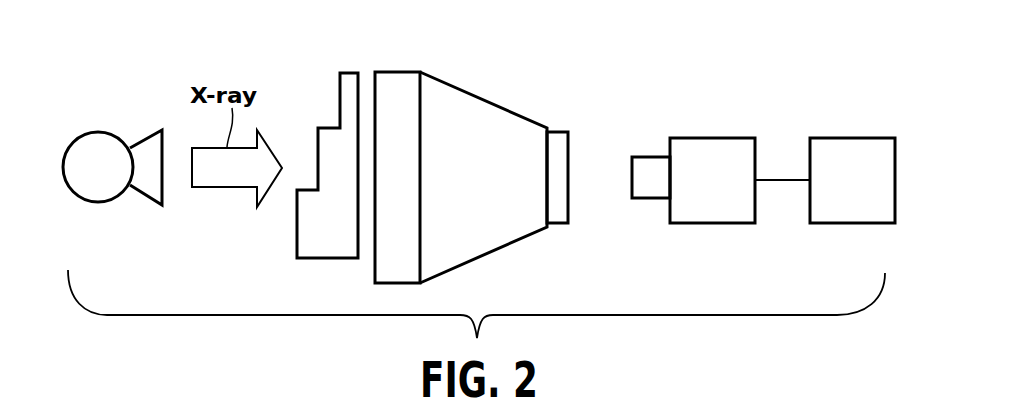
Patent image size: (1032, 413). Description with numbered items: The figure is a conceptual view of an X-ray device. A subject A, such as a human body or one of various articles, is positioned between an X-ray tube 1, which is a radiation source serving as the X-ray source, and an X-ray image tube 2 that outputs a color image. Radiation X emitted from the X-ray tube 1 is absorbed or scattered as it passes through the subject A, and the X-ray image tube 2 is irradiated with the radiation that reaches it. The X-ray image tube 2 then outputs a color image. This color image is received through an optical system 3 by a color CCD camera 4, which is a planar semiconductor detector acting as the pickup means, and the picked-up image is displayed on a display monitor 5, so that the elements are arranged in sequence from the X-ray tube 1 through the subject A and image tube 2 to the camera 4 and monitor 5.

The X-ray tube 1 is at (99, 132).
The subject A is at (348, 87).
The X-ray image tube 2 is at (443, 83).
The optical system 3 is at (652, 155).
The color CCD camera 4 is at (710, 137).
The display monitor 5 is at (848, 137).